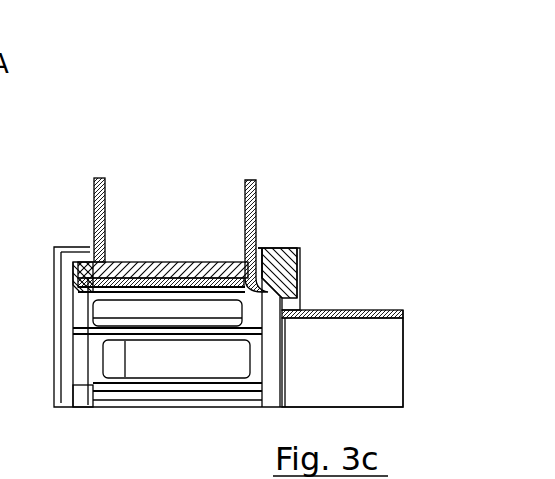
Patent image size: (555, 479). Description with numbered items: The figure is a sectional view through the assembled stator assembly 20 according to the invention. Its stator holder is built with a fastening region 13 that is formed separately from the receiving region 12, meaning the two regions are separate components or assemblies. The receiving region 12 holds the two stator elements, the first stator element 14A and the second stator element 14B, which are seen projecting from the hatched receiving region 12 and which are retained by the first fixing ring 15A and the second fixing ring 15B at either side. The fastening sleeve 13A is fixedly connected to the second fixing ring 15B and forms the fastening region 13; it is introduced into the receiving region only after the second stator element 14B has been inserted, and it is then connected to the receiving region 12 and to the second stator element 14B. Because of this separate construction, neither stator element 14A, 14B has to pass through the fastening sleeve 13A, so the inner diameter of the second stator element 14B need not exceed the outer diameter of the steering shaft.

The stator assembly 20 is at (338, 98).
The receiving region 12 is at (164, 251).
The first stator element 14A is at (100, 180).
The second stator element 14B is at (249, 181).
The first fixing ring 15A is at (68, 240).
The second fixing ring 15B is at (283, 263).
The fastening sleeve 13A is at (338, 311).
The fastening region 13 is at (340, 332).